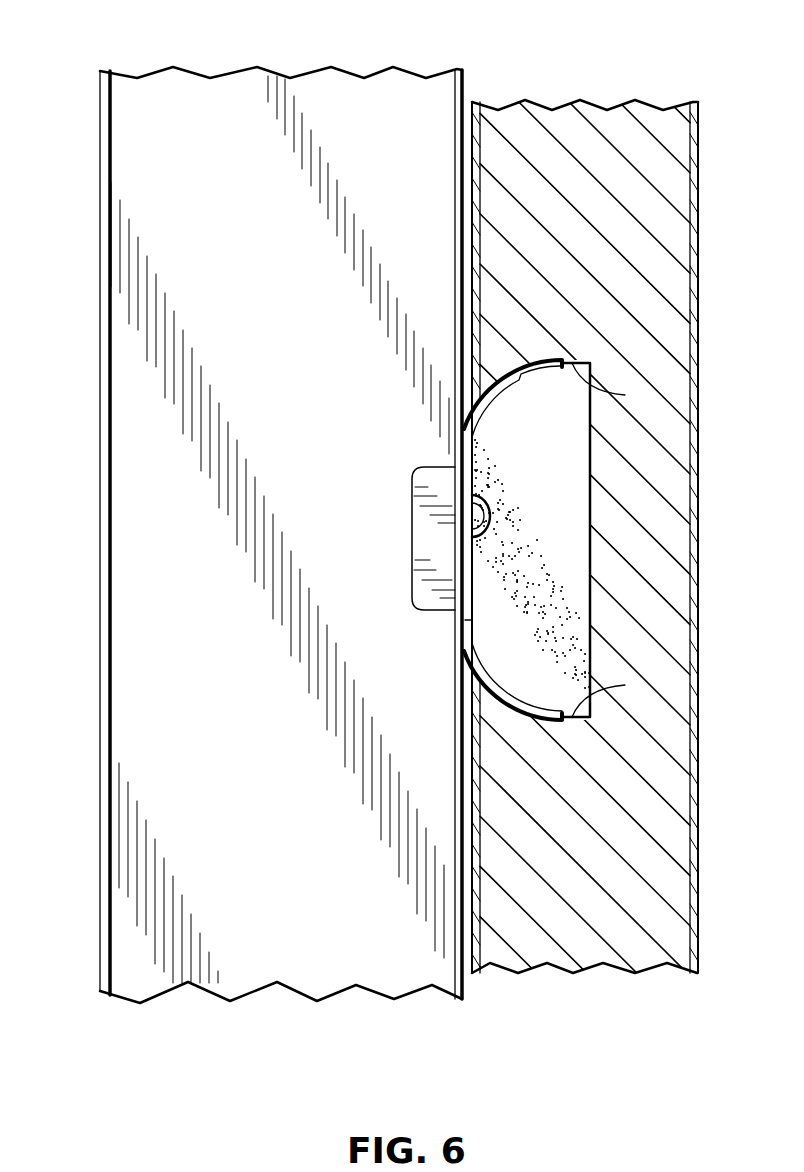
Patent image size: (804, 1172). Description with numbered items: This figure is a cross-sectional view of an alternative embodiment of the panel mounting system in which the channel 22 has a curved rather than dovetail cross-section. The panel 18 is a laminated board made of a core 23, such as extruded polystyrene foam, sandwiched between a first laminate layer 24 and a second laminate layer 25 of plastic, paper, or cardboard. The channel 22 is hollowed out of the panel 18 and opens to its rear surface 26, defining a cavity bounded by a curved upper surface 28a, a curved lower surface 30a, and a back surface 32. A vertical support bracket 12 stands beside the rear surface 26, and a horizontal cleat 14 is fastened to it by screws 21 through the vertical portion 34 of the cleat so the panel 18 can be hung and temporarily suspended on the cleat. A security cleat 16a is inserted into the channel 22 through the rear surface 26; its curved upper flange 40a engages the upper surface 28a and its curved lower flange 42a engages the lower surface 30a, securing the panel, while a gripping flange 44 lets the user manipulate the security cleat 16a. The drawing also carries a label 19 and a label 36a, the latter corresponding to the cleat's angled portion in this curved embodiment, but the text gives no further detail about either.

The vertical support bracket 12 is at (100, 81).
The horizontal cleat 14 is at (475, 447).
The security cleat 16a is at (464, 540).
The panel 18 is at (580, 586).
The outer wall surface 19 is at (690, 481).
The screws 21 is at (480, 518).
The channel 22 is at (532, 565).
The core 23 is at (570, 112).
The first laminate layer 24 is at (693, 102).
The second laminate layer 25 is at (477, 102).
The rear surface 26 is at (471, 153).
The upper surface 28a is at (625, 395).
The lower surface 30a is at (625, 685).
The back surface 32 is at (583, 567).
The vertical portion 34 is at (470, 590).
The inner reflective surface 36a is at (496, 400).
The upper flange 40a is at (452, 402).
The lower flange 42a is at (494, 684).
The gripping flange 44 is at (413, 505).